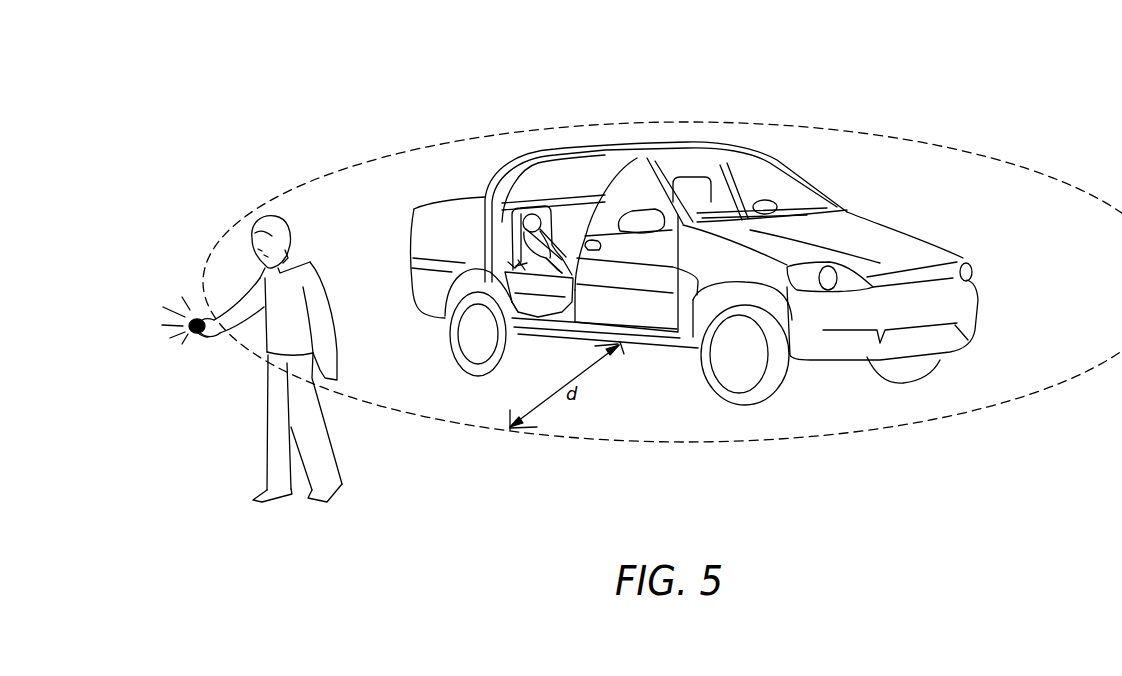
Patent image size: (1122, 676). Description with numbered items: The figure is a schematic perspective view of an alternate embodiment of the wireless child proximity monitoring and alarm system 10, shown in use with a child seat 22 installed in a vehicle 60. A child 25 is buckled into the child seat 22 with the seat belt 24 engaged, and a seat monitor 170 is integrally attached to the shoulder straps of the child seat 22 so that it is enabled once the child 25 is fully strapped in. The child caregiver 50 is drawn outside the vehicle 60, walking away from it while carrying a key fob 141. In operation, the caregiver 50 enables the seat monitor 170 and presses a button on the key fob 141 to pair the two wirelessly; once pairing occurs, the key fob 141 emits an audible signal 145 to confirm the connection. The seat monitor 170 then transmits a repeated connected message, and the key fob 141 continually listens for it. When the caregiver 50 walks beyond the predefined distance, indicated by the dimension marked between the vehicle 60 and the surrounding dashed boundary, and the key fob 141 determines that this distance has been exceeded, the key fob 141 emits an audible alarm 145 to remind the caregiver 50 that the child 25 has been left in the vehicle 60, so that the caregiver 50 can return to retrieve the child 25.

The system 10 is at (853, 100).
The child seat 22 is at (488, 207).
The seat belt 24 is at (515, 268).
The child 25 is at (518, 202).
The child caregiver 50 is at (327, 469).
The vehicle 60 is at (701, 234).
The key fob 141 is at (192, 318).
The audible alarm 145 is at (208, 337).
The seat monitor 170 is at (573, 205).